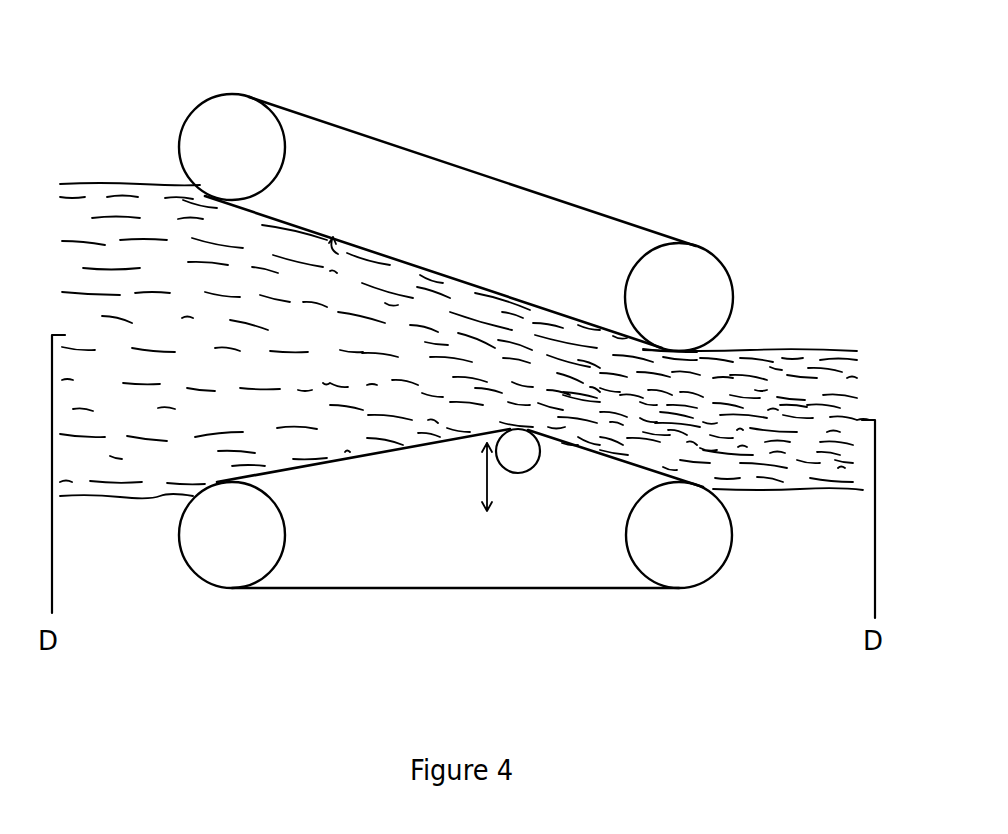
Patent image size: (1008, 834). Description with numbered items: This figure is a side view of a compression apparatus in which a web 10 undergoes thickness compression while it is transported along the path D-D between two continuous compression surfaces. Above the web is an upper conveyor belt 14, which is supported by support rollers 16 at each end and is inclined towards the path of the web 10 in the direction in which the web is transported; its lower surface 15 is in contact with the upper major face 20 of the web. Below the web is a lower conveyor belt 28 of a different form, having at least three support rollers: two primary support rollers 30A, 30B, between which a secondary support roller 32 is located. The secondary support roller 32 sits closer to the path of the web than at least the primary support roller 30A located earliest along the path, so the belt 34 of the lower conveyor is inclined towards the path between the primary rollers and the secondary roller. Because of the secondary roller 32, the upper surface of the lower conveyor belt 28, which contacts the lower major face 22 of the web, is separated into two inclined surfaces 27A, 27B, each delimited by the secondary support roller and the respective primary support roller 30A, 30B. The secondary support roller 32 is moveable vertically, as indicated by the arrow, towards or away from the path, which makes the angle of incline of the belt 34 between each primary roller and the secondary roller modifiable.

The web 10 is at (810, 365).
The upper conveyor belt 14 is at (723, 268).
The lower surface of the upper conveyor belt 15 is at (336, 250).
The support rollers 16 is at (245, 120).
The upper major face of the web 20 is at (175, 183).
The lower major face of the web 22 is at (170, 496).
The inclined surface 27A is at (446, 438).
The inclined surface 27B is at (668, 470).
The lower conveyor belt 28 is at (224, 590).
The primary support roller 30A is at (253, 562).
The primary support roller 30B is at (700, 560).
The secondary support roller 32 is at (517, 456).
The belt 34 is at (342, 588).